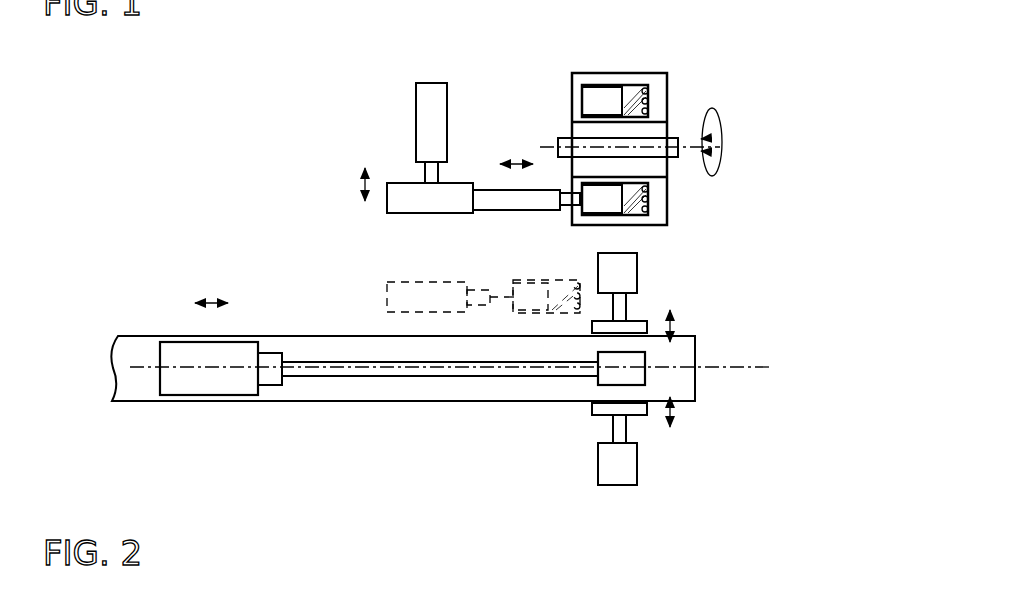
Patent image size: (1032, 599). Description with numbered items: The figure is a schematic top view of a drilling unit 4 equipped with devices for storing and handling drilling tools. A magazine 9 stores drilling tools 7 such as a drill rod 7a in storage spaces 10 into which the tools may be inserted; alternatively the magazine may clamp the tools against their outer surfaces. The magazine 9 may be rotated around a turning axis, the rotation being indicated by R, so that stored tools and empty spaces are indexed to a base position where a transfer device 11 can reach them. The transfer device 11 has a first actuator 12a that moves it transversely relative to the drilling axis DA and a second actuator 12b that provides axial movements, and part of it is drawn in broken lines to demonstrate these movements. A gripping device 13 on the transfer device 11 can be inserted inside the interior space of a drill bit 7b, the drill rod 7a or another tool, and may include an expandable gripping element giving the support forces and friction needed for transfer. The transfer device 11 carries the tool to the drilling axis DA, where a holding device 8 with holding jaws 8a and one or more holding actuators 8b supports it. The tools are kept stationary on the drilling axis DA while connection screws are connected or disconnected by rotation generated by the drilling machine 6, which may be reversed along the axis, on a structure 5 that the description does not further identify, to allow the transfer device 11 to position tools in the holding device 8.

The drilling unit 4 is at (193, 182).
The machine bed / workpiece carriage 5 is at (137, 348).
The drilling machine 6 is at (195, 386).
The drilling tool 7 is at (463, 247).
The drill rod 7a is at (630, 98).
The drill bit 7b is at (597, 374).
The holding device 8 is at (634, 377).
The holding jaws 8a is at (634, 321).
The holding actuator 8b is at (625, 272).
The magazine 9 is at (688, 75).
The storage space 10 is at (659, 105).
The transfer device 11 is at (328, 132).
The first actuator 12a is at (427, 117).
The second actuator 12b is at (433, 208).
The gripping device 13 is at (565, 212).
The rotation direction R is at (736, 119).
The drilling axis DA is at (742, 365).